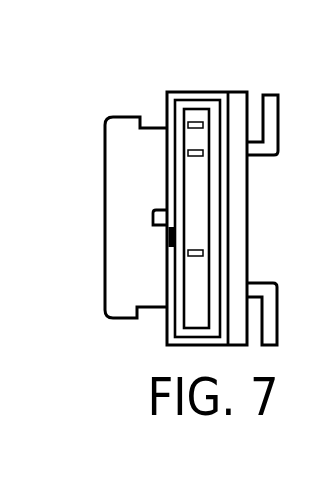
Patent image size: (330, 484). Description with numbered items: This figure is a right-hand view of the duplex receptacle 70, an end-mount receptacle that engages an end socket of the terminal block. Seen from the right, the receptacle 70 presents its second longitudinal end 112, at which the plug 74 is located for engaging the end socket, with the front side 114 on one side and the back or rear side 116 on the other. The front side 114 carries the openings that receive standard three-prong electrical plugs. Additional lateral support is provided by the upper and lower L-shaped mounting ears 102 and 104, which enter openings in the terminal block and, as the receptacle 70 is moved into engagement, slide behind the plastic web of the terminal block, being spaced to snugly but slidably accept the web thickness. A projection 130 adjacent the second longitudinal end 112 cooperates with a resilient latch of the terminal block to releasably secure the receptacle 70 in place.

The duplex receptacle 70 is at (322, 216).
The plug 74 is at (200, 102).
The upper L-shaped mounting ear 102 is at (280, 106).
The lower L-shaped mounting ear 104 is at (278, 306).
The second longitudinal end 112 is at (229, 254).
The front side 114 is at (97, 217).
The rear side 116 is at (277, 184).
The projection 130 is at (152, 218).